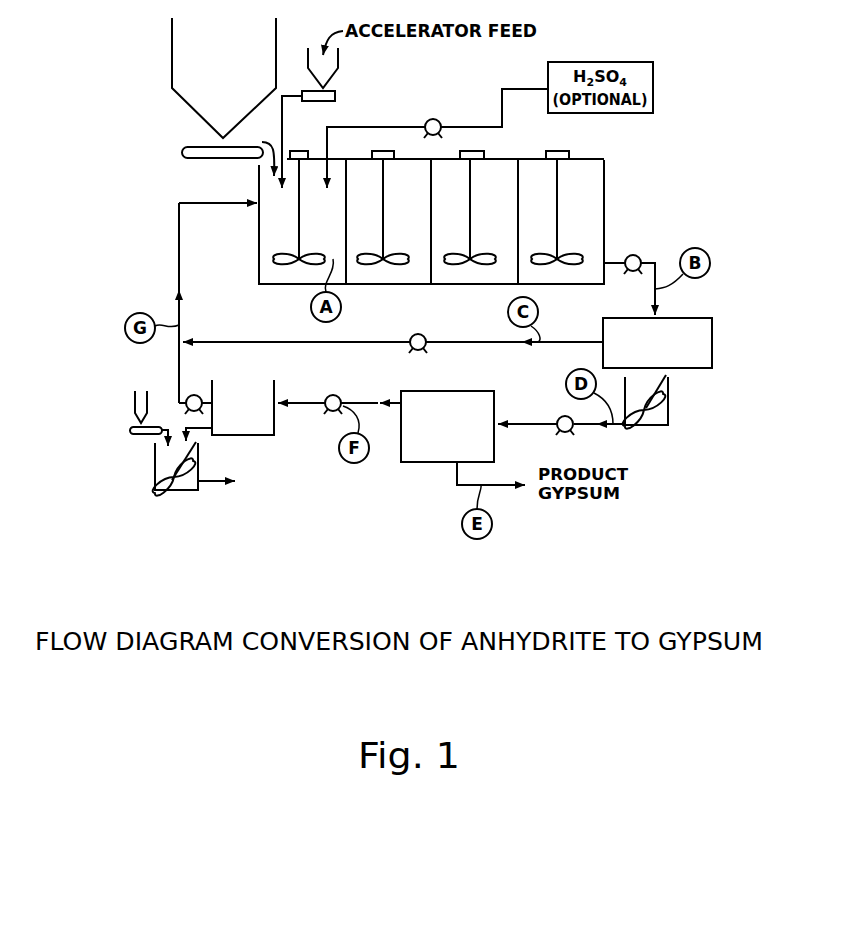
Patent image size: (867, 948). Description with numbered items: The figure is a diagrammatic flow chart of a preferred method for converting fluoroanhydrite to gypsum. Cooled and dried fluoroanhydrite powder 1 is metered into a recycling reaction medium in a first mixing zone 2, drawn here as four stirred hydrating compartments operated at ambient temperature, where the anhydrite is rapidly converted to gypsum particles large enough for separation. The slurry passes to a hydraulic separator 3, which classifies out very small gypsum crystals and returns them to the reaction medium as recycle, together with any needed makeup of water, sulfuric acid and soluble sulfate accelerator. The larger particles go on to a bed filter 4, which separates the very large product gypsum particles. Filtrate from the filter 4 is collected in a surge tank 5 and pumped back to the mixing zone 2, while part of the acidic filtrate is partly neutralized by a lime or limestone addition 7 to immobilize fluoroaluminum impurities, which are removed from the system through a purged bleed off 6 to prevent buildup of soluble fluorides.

The fluoroanhydrite powder 1 is at (178, 70).
The first mixing zone 2 is at (412, 285).
The hydraulic separator 3 is at (712, 340).
The bed filter 4 is at (472, 391).
The surge tank 5 is at (275, 390).
The purged bleed off 6 is at (155, 462).
The lime or limestone addition 7 is at (135, 405).